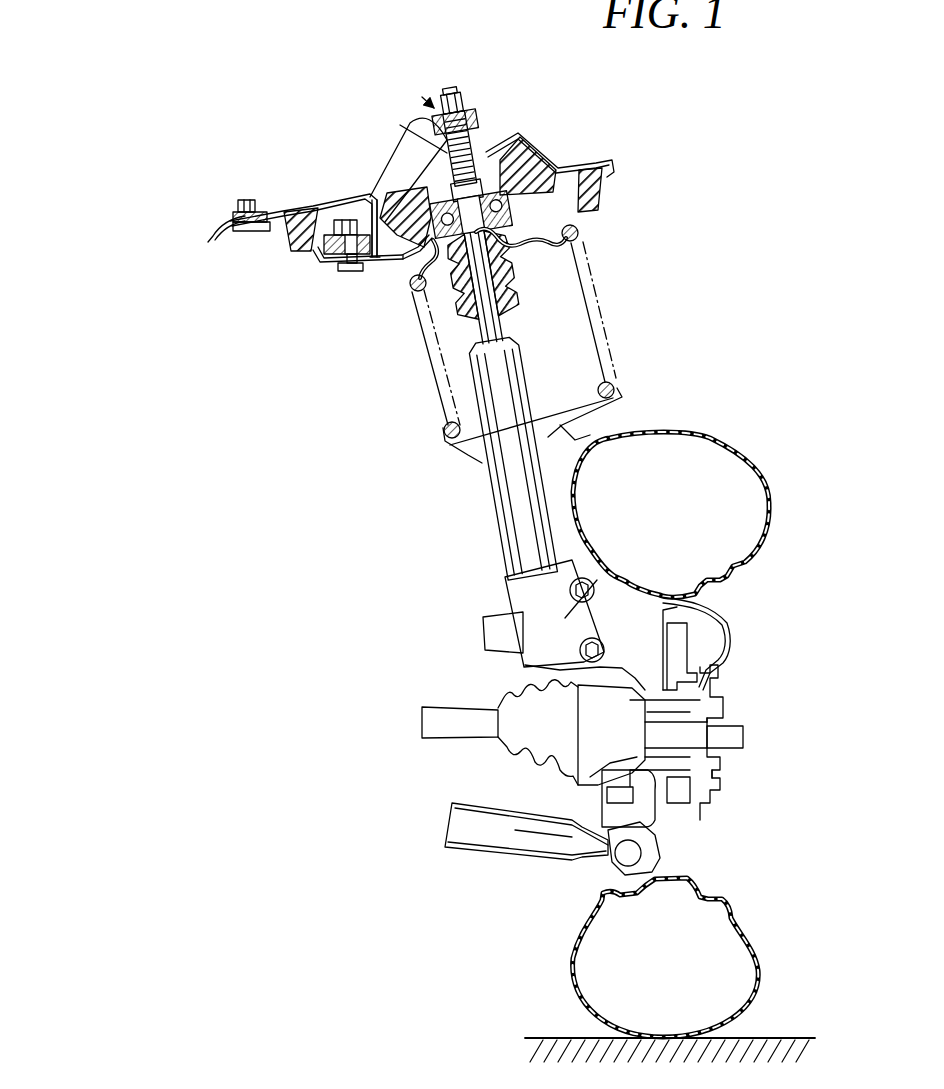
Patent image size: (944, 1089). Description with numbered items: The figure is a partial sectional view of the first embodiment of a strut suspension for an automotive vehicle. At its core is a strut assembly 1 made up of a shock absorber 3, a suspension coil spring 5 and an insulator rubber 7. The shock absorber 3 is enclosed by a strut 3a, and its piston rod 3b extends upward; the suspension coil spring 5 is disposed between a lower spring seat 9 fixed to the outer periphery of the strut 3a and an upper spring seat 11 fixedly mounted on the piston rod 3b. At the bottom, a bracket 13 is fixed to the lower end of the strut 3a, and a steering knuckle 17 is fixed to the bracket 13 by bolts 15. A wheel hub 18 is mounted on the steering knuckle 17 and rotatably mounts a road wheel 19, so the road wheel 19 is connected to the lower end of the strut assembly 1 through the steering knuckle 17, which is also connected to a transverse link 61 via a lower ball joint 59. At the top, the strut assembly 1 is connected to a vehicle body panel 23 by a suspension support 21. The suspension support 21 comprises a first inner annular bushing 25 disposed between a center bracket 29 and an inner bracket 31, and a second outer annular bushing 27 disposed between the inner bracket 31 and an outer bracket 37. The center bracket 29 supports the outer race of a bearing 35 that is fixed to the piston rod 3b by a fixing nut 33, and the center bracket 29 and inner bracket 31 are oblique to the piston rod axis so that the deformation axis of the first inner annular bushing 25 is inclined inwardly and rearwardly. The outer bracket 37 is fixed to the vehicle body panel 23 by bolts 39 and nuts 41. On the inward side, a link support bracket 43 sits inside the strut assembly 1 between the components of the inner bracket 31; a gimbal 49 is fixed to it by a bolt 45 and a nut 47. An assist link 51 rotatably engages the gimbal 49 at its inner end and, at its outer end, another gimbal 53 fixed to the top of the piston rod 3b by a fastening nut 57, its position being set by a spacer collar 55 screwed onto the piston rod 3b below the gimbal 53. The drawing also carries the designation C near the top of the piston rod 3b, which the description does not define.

The strut assembly 1 is at (432, 421).
The shock absorber 3 is at (480, 494).
The strut 3a is at (513, 541).
The piston rod 3b is at (450, 150).
The suspension coil spring 5 is at (607, 351).
The insulator rubber 7 is at (512, 281).
The lower spring seat 9 is at (563, 412).
The upper spring seat 11 is at (548, 241).
The bracket 13 is at (586, 618).
The bolts 15 is at (589, 578).
The steering knuckle 17 is at (650, 677).
The wheel hub 18 is at (715, 778).
The road wheel 19 is at (740, 604).
The suspension support 21 is at (558, 150).
The vehicle body panel 23 is at (213, 233).
The first inner annular bushing 25 is at (522, 157).
The second outer annular bushing 27 is at (603, 191).
The center bracket 29 is at (445, 176).
The inner bracket 31 is at (358, 205).
The fixing nut 33 is at (408, 262).
The bearing 35 is at (440, 246).
The outer bracket 37 is at (293, 254).
The bolts 39 is at (252, 233).
The nuts 41 is at (249, 200).
The link support bracket 43 is at (328, 266).
The bolt 45 is at (349, 272).
The nut 47 is at (347, 236).
The gimbal 49 is at (336, 226).
The assist link 51 is at (373, 153).
The gimbal 53 is at (468, 118).
The spacer collar 55 is at (409, 129).
The fastening nut 57 is at (458, 92).
The lower ball joint 59 is at (628, 853).
The transverse link 61 is at (495, 858).
The center axis C is at (419, 93).